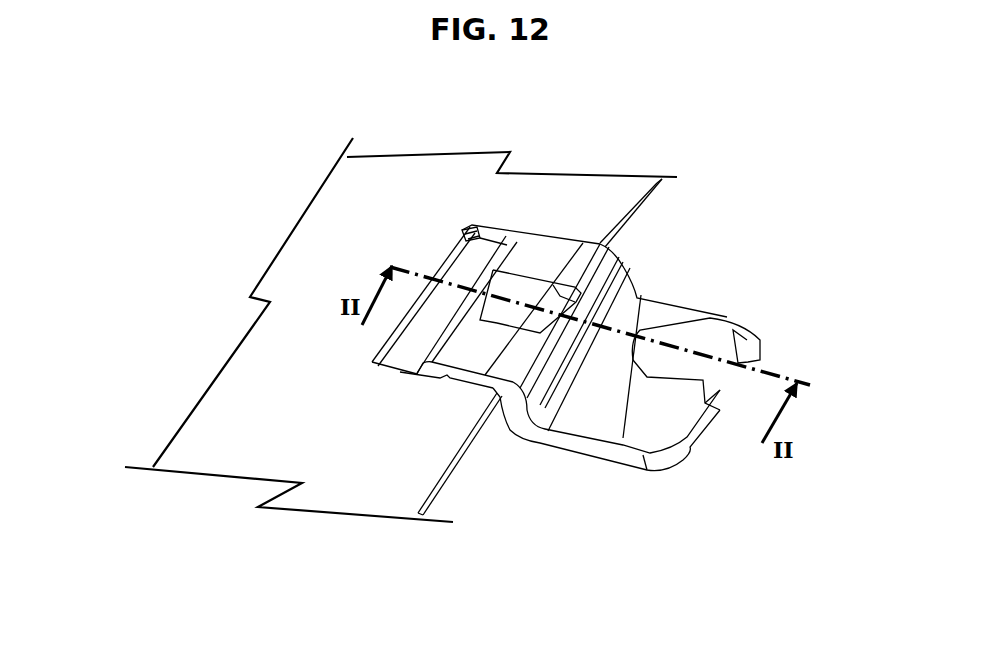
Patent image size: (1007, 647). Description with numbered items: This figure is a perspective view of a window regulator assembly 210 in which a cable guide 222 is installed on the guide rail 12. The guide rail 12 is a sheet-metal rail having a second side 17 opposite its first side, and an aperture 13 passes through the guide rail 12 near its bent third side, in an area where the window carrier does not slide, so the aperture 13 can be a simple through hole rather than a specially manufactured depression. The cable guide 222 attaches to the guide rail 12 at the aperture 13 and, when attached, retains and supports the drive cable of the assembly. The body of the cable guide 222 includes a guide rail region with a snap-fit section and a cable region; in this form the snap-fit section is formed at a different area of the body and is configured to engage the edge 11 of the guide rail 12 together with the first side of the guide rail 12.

The window regulator assembly 210 is at (302, 148).
The guide rail 12 is at (268, 404).
The second side 17 is at (593, 207).
The edge 11 is at (463, 448).
The cable guide 222 is at (595, 287).
The aperture 13 is at (473, 247).